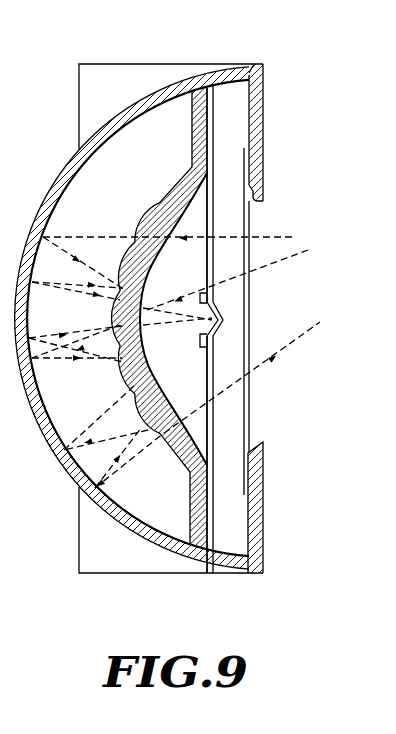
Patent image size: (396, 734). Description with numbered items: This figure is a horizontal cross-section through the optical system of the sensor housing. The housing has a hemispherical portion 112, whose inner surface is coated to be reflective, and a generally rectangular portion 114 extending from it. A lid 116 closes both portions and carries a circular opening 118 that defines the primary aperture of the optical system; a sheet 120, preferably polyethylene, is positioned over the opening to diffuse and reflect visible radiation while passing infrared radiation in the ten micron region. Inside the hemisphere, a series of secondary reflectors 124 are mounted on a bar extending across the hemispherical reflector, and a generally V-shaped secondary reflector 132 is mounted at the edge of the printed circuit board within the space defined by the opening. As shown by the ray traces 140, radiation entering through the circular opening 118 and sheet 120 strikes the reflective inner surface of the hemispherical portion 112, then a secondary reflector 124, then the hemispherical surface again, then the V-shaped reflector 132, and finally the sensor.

The hemispherical portion 112 is at (78, 163).
The rectangular portion 114 is at (80, 98).
The lid 116 is at (265, 110).
The circular opening 118 is at (264, 202).
The sheet 120 is at (252, 417).
The secondary reflectors 124 is at (148, 212).
The secondary reflector 132 is at (226, 316).
The ray traces 140 is at (192, 223).